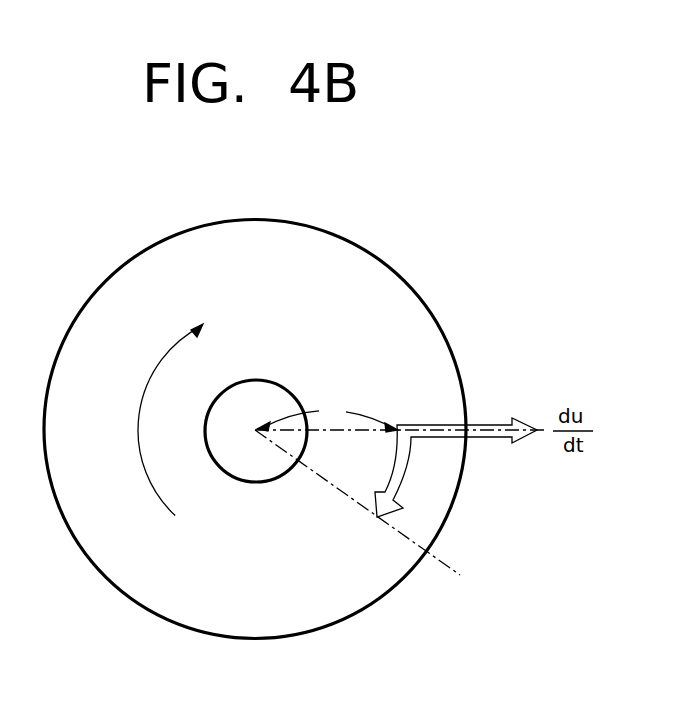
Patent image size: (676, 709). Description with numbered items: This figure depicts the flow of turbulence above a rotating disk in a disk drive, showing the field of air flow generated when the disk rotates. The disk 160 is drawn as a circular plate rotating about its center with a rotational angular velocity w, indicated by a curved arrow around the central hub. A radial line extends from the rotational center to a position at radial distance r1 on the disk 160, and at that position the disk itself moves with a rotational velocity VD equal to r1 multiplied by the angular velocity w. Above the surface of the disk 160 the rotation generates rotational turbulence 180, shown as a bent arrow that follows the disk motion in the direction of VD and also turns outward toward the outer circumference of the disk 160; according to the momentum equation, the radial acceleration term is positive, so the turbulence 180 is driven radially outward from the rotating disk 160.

The disk 160 is at (383, 277).
The rotational turbulence 180 is at (405, 478).
The rotational angular velocity w is at (170, 420).
The radial position r1 is at (327, 416).
The disk velocity VD is at (376, 490).